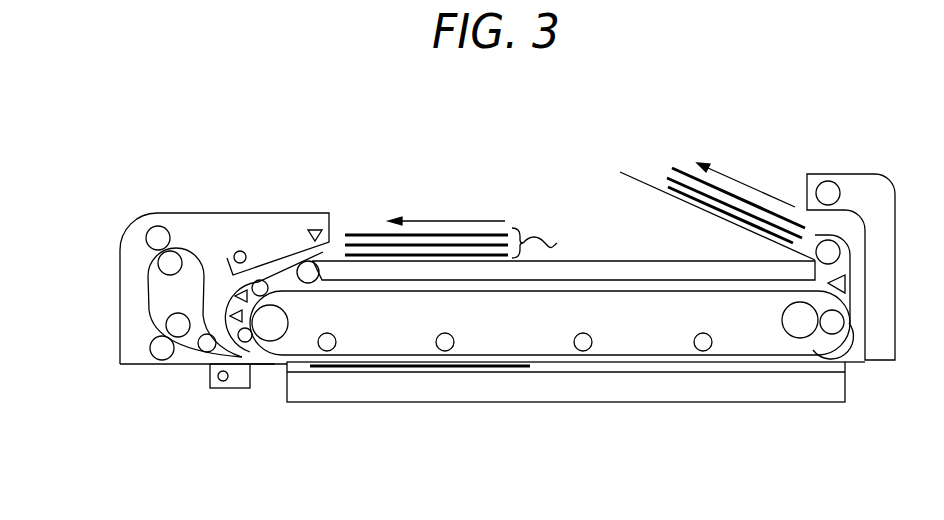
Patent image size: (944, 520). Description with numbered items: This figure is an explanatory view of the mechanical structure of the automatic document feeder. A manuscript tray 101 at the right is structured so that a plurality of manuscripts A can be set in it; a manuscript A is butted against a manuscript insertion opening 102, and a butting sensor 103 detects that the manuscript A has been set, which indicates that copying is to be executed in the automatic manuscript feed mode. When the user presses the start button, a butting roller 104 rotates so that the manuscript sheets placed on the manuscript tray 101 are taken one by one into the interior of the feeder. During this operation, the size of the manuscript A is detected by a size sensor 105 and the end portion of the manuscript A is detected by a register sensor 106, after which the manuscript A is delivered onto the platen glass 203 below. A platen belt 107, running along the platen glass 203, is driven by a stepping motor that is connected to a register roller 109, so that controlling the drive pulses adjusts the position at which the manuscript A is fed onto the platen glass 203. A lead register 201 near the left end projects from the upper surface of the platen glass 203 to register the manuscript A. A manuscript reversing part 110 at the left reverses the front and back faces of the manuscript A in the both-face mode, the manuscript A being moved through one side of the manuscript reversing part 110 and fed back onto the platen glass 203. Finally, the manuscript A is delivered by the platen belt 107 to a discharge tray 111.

The manuscript tray 101 is at (450, 260).
The manuscript insertion opening 102 is at (323, 252).
The butting sensor 103 is at (315, 230).
The butting roller 104 is at (308, 272).
The size sensor 105 is at (235, 296).
The register sensor 106 is at (230, 316).
The platen belt 107 is at (630, 355).
The register roller 109 is at (250, 347).
The manuscript reversing part 110 is at (152, 258).
The discharge tray 111 is at (640, 180).
The lead register 201 is at (210, 385).
The platen glass 203 is at (747, 383).
The manuscript A is at (433, 368).